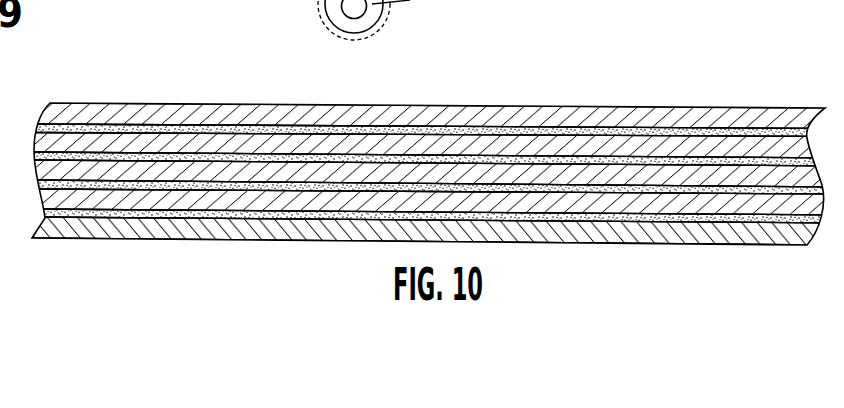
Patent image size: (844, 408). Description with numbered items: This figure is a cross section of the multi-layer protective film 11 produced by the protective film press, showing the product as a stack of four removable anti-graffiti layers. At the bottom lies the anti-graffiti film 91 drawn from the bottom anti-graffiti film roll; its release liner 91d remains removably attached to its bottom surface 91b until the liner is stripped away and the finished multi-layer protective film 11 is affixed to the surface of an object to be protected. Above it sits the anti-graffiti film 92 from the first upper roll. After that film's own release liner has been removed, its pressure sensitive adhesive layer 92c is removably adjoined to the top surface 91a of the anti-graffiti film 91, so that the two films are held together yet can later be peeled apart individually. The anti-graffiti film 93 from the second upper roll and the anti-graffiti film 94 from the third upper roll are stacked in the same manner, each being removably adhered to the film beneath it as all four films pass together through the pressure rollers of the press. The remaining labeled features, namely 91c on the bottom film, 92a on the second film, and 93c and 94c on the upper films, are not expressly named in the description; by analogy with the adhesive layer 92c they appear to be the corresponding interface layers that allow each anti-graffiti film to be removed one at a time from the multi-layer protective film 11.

The multi-layer protective film 11 is at (685, 30).
The anti-graffiti film 91 is at (607, 205).
The top surface 91a is at (553, 190).
The bottom surface 91b is at (637, 218).
The base sublayer of first layer 91c is at (687, 233).
The release liner 91d is at (742, 238).
The anti-graffiti film 92 is at (294, 170).
The upper surface of second layer 92a is at (400, 163).
The pressure sensitive adhesive layer 92c is at (170, 190).
The anti-graffiti film 93 is at (590, 150).
The adhesive sublayer of third layer 93c is at (686, 162).
The anti-graffiti film 94 is at (253, 114).
The adhesive sublayer of fourth layer 94c is at (222, 122).